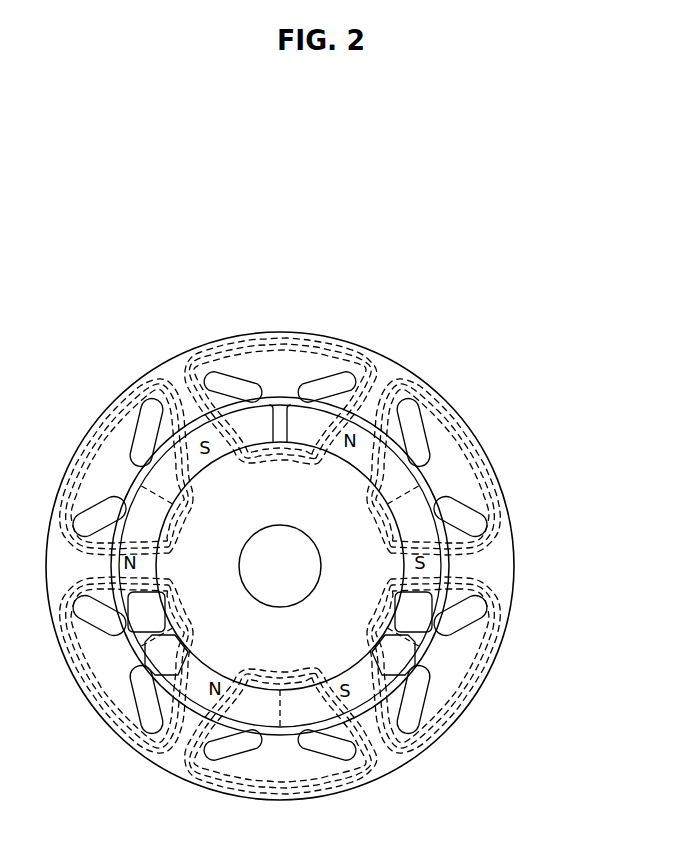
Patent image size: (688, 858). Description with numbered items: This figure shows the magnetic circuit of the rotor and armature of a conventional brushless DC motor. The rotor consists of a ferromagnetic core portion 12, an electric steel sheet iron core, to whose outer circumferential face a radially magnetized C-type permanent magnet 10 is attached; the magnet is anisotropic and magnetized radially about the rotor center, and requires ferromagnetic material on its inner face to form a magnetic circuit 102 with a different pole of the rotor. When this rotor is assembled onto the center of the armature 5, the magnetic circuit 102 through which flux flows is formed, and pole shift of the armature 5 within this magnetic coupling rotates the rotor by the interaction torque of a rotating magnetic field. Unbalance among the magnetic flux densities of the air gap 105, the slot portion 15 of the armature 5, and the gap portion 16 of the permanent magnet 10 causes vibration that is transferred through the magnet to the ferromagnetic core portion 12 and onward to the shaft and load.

The armature 5 is at (512, 560).
The magnetic circuit 102 is at (432, 394).
The ferromagnetic core portion 12 is at (340, 497).
The air gap 105 is at (231, 406).
The slot portion 15 is at (285, 384).
The C-type permanent magnet 10 is at (422, 617).
The gap portion 16 is at (418, 644).